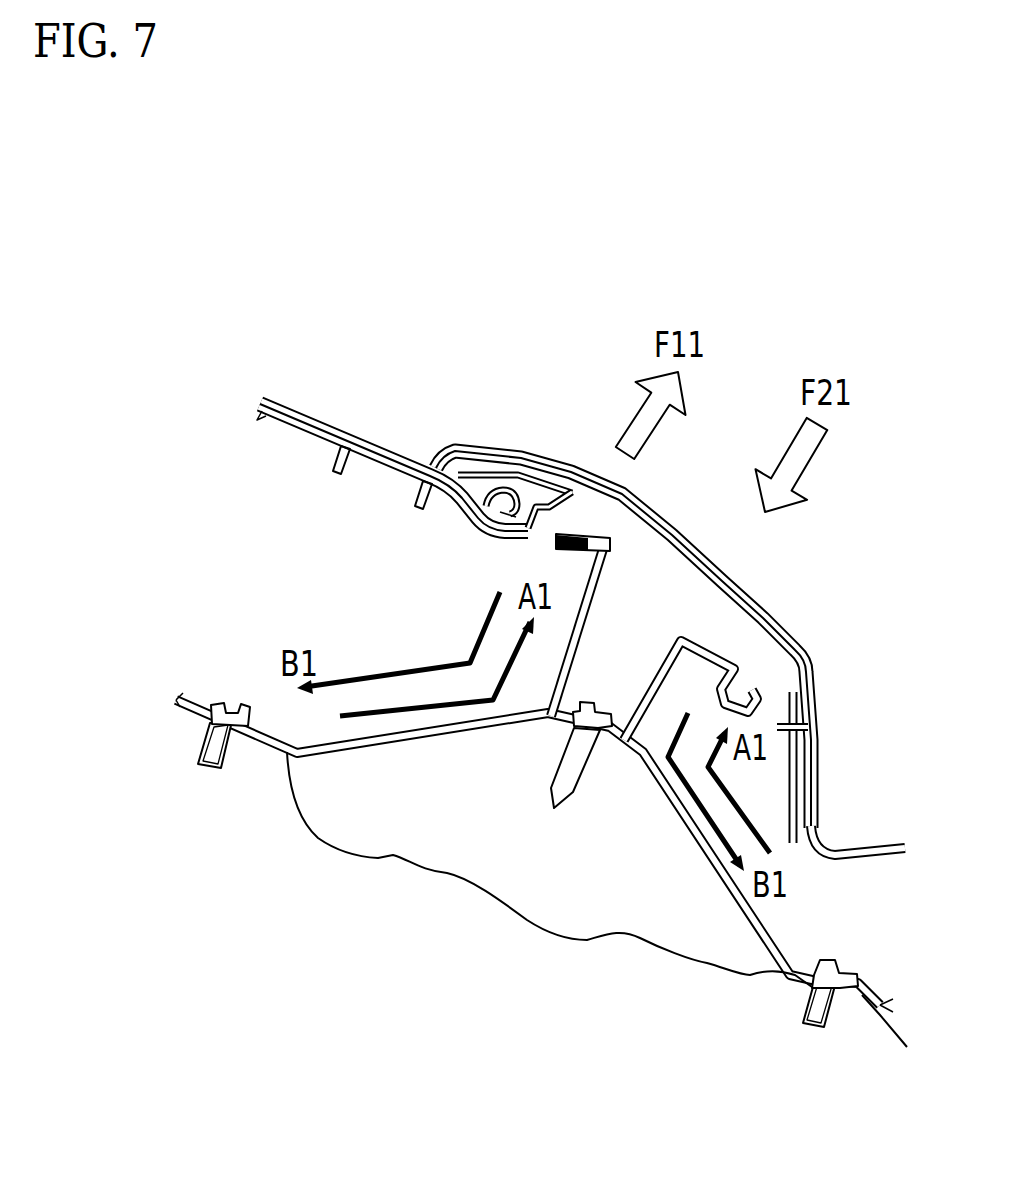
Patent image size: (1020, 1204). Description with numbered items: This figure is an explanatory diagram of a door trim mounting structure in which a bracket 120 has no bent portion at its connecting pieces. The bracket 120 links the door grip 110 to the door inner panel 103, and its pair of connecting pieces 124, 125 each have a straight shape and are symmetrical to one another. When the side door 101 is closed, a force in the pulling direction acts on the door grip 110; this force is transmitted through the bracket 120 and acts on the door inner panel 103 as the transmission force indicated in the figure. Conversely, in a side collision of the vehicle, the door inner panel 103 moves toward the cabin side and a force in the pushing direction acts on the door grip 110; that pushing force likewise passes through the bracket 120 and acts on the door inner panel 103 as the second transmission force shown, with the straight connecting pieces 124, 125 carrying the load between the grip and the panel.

The side door 101 is at (797, 623).
The door inner panel 103 is at (375, 860).
The door grip 110 is at (314, 433).
The bracket 120 is at (656, 872).
The connecting piece 124 is at (418, 735).
The connecting piece 125 is at (822, 856).